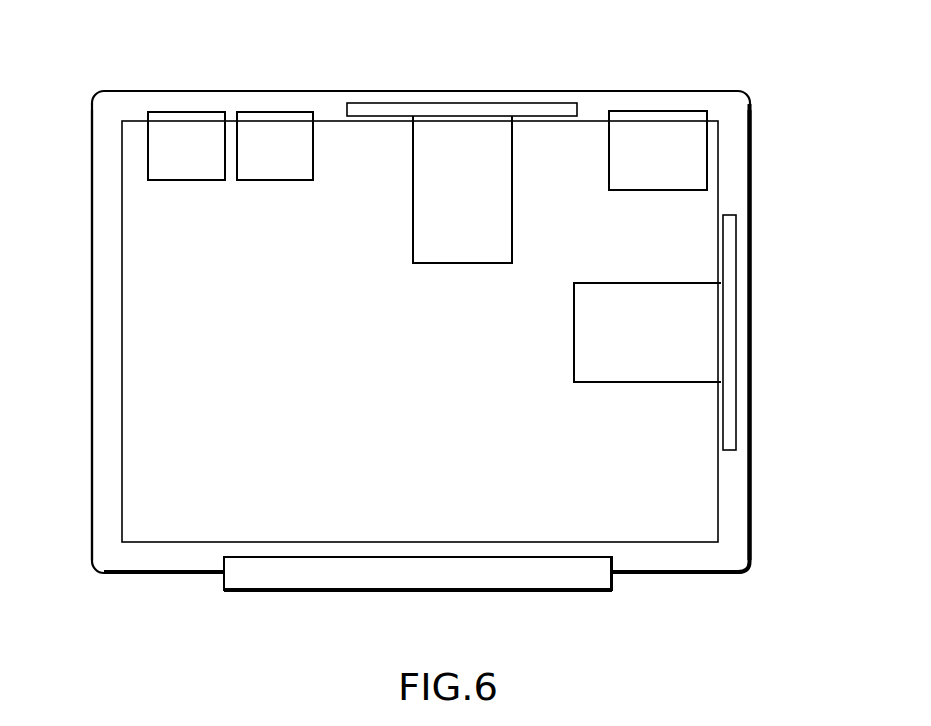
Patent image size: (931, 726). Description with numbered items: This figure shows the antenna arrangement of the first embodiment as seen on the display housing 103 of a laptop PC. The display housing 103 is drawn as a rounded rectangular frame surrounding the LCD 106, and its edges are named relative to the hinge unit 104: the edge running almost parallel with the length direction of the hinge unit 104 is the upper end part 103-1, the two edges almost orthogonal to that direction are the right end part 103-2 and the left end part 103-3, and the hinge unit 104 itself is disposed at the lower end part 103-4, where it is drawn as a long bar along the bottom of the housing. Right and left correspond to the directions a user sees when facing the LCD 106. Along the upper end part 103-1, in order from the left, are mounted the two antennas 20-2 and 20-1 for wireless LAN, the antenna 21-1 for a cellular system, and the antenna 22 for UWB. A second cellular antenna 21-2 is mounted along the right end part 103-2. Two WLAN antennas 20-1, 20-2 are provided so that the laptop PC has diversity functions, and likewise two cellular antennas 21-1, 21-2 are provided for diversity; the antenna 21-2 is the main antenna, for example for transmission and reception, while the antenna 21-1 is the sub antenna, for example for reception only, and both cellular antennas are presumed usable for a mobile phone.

The display housing 103 is at (722, 108).
The upper end part 103-1 is at (327, 103).
The right end part 103-2 is at (737, 183).
The left end part 103-3 is at (102, 220).
The lower end part 103-4 is at (670, 563).
The hinge unit 104 is at (577, 578).
The LCD 106 is at (705, 480).
The antenna for wireless LAN 20-1 is at (276, 110).
The antenna for wireless LAN 20-2 is at (189, 110).
The antenna for a cellular system 21-1 is at (463, 112).
The antenna for a cellular system 21-2 is at (718, 330).
The antenna for UWB 22 is at (652, 110).